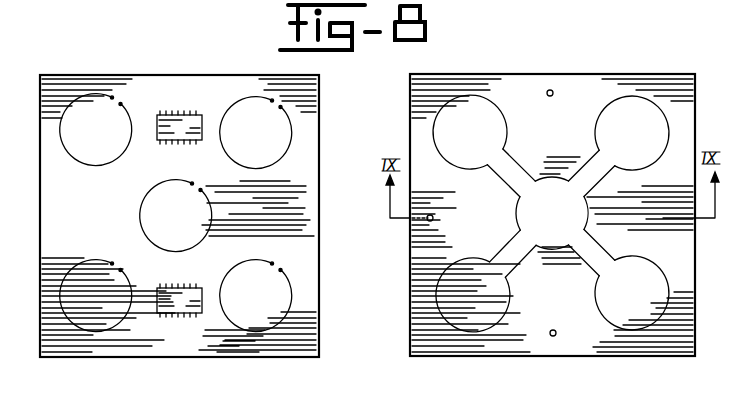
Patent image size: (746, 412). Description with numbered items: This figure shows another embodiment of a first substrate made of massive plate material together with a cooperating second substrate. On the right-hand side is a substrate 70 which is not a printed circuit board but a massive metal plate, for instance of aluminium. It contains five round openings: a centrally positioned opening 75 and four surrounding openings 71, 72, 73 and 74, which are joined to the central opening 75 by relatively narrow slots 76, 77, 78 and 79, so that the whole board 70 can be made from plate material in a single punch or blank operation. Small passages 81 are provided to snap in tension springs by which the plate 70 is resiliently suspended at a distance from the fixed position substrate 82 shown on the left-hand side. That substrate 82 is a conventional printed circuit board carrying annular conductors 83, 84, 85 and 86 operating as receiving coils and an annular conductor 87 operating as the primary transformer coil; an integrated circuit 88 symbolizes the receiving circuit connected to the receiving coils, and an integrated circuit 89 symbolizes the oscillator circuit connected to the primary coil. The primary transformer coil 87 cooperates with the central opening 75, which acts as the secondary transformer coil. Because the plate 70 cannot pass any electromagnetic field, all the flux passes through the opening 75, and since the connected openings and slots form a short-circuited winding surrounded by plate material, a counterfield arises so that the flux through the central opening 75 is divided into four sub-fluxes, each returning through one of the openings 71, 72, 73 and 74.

The substrate 70 is at (677, 335).
The opening 71 is at (632, 96).
The opening 72 is at (470, 95).
The opening 73 is at (466, 332).
The opening 74 is at (632, 330).
The central opening 75 is at (590, 218).
The slot 76 is at (588, 161).
The slot 77 is at (517, 161).
The slot 78 is at (520, 267).
The slot 79 is at (587, 267).
The small passage 81 is at (430, 221).
The fixed position substrate 82 is at (305, 340).
The annular conductor 83 is at (98, 334).
The annular conductor 84 is at (97, 96).
The annular conductor 85 is at (258, 99).
The annular conductor 86 is at (258, 334).
The primary transformer coil 87 is at (142, 216).
The integrated circuit 88 is at (177, 313).
The integrated circuit 89 is at (180, 115).